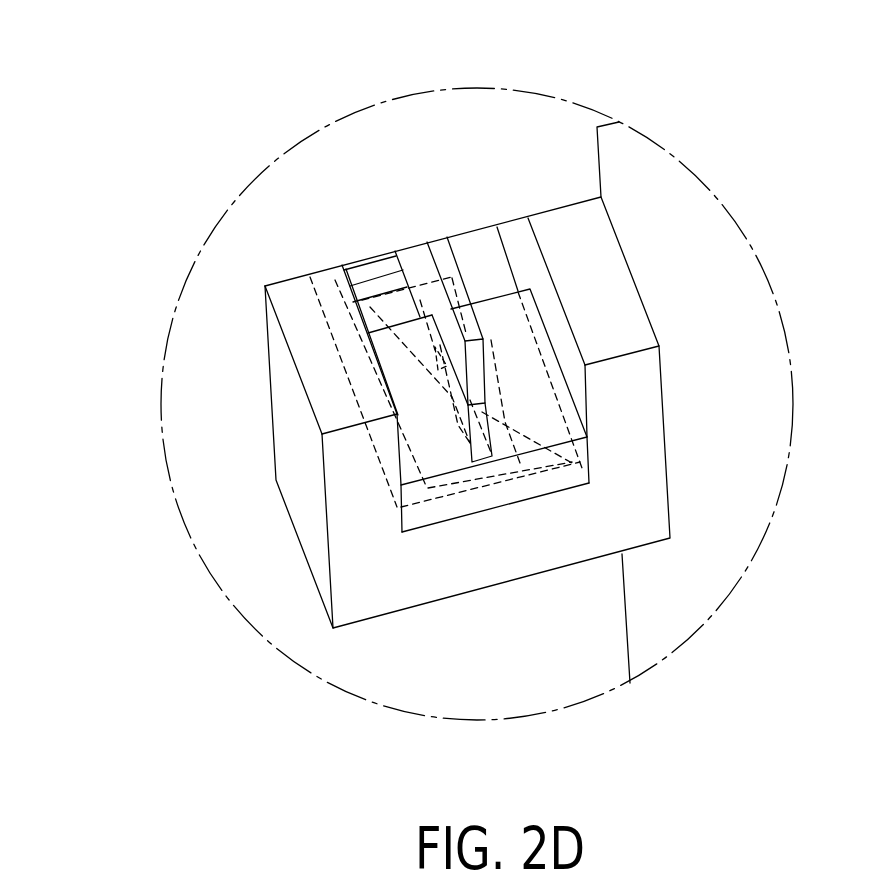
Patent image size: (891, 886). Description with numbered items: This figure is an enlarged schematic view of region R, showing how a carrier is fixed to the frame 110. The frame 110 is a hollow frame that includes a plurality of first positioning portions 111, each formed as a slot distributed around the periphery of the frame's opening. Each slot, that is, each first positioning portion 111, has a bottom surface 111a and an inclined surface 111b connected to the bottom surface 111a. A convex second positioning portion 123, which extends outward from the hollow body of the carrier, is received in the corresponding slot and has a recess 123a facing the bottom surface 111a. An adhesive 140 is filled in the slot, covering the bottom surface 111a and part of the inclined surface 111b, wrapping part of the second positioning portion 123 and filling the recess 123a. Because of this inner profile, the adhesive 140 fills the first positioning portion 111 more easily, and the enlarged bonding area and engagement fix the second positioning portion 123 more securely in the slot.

The frame 110 is at (575, 690).
The first positioning portion 111 is at (518, 242).
The bottom surface 111a is at (418, 402).
The inclined surface 111b is at (348, 340).
The second positioning portion 123 is at (415, 262).
The recess 123a is at (343, 267).
The adhesive 140 is at (507, 328).
The region R is at (277, 157).